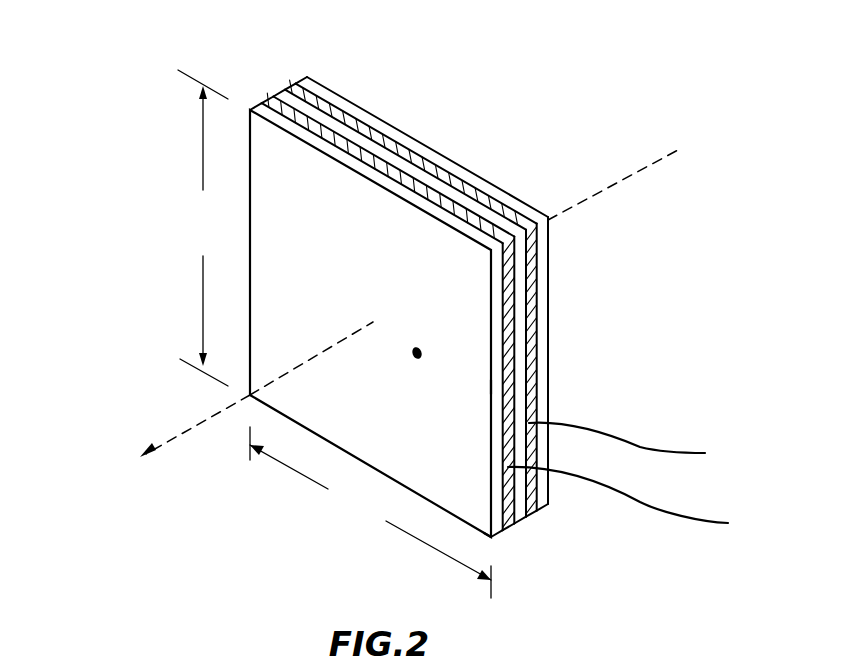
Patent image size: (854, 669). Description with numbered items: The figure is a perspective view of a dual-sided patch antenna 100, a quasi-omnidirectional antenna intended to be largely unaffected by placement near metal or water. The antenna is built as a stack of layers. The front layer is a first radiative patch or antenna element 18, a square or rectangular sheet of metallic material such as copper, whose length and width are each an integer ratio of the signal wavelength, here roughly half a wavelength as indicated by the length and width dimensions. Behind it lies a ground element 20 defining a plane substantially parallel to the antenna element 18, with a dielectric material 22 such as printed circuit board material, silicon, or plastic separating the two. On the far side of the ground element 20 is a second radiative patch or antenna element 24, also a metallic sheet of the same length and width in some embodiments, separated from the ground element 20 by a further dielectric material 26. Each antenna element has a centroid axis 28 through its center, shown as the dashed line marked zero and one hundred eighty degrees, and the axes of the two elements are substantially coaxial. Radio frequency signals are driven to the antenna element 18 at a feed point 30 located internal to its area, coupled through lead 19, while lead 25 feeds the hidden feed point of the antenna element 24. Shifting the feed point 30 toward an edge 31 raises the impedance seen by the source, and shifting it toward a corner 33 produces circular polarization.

The dual-sided patch antenna 100 is at (562, 68).
The first antenna element 18 is at (350, 235).
The ground element 20 is at (273, 93).
The dielectric material 22 is at (257, 106).
The second antenna element 24 is at (538, 207).
The dielectric material 26 is at (520, 217).
The centroid axis 28 is at (202, 422).
The feed point 30 is at (420, 346).
The edge 31 is at (492, 387).
The corner 33 is at (488, 533).
The lead 25 is at (642, 443).
The lead 19 is at (645, 505).